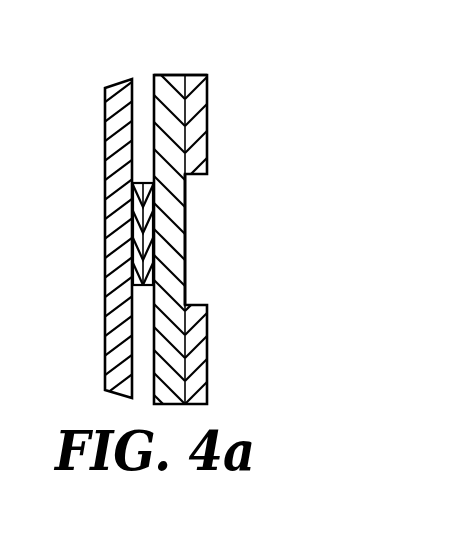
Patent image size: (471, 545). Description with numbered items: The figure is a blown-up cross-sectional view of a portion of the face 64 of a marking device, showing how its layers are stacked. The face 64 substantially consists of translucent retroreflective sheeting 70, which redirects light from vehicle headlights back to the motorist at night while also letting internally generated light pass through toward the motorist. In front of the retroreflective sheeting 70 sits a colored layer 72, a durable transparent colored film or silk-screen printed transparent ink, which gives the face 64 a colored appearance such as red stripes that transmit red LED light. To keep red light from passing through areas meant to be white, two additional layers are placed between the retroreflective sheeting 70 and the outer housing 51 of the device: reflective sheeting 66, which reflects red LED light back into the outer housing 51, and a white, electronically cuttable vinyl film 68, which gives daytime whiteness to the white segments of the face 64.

The outer housing 51 is at (105, 302).
The face 64 is at (208, 87).
The reflective sheeting 66 is at (133, 209).
The white vinyl film 68 is at (186, 245).
The retroreflective sheeting 70 is at (167, 90).
The colored layer 72 is at (208, 138).